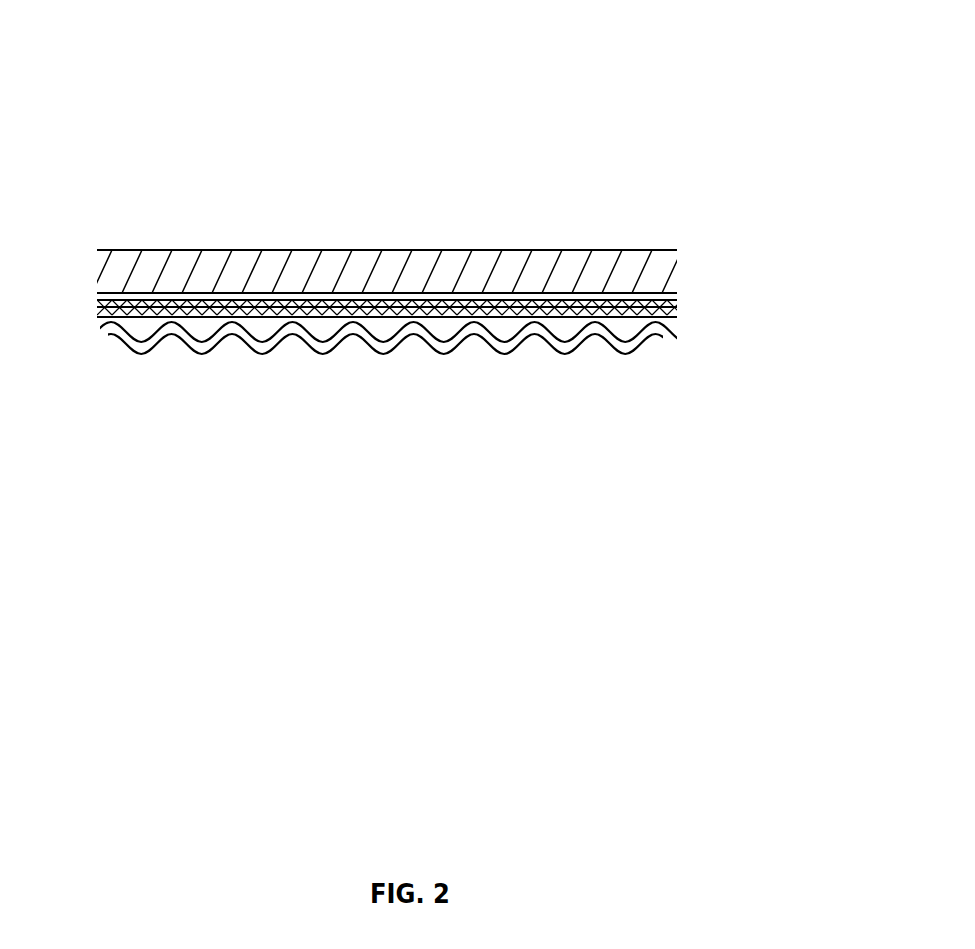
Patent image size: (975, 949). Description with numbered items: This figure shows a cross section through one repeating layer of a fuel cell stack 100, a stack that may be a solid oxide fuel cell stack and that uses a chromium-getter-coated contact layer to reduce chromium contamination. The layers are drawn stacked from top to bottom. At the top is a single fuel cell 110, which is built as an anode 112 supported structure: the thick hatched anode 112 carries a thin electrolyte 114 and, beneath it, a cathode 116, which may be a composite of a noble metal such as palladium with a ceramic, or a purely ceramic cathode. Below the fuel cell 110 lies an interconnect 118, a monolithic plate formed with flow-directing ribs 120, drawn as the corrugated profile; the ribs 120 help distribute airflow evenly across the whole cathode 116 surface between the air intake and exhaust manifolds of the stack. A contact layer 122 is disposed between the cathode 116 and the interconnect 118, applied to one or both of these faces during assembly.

The fuel cell stack 100 is at (86, 116).
The fuel cell 110 is at (692, 250).
The anode 112 is at (337, 276).
The electrolyte 114 is at (100, 297).
The cathode 116 is at (100, 307).
The interconnect 118 is at (700, 340).
The flow-directing ribs 120 is at (583, 347).
The contact layer 122 is at (158, 334).